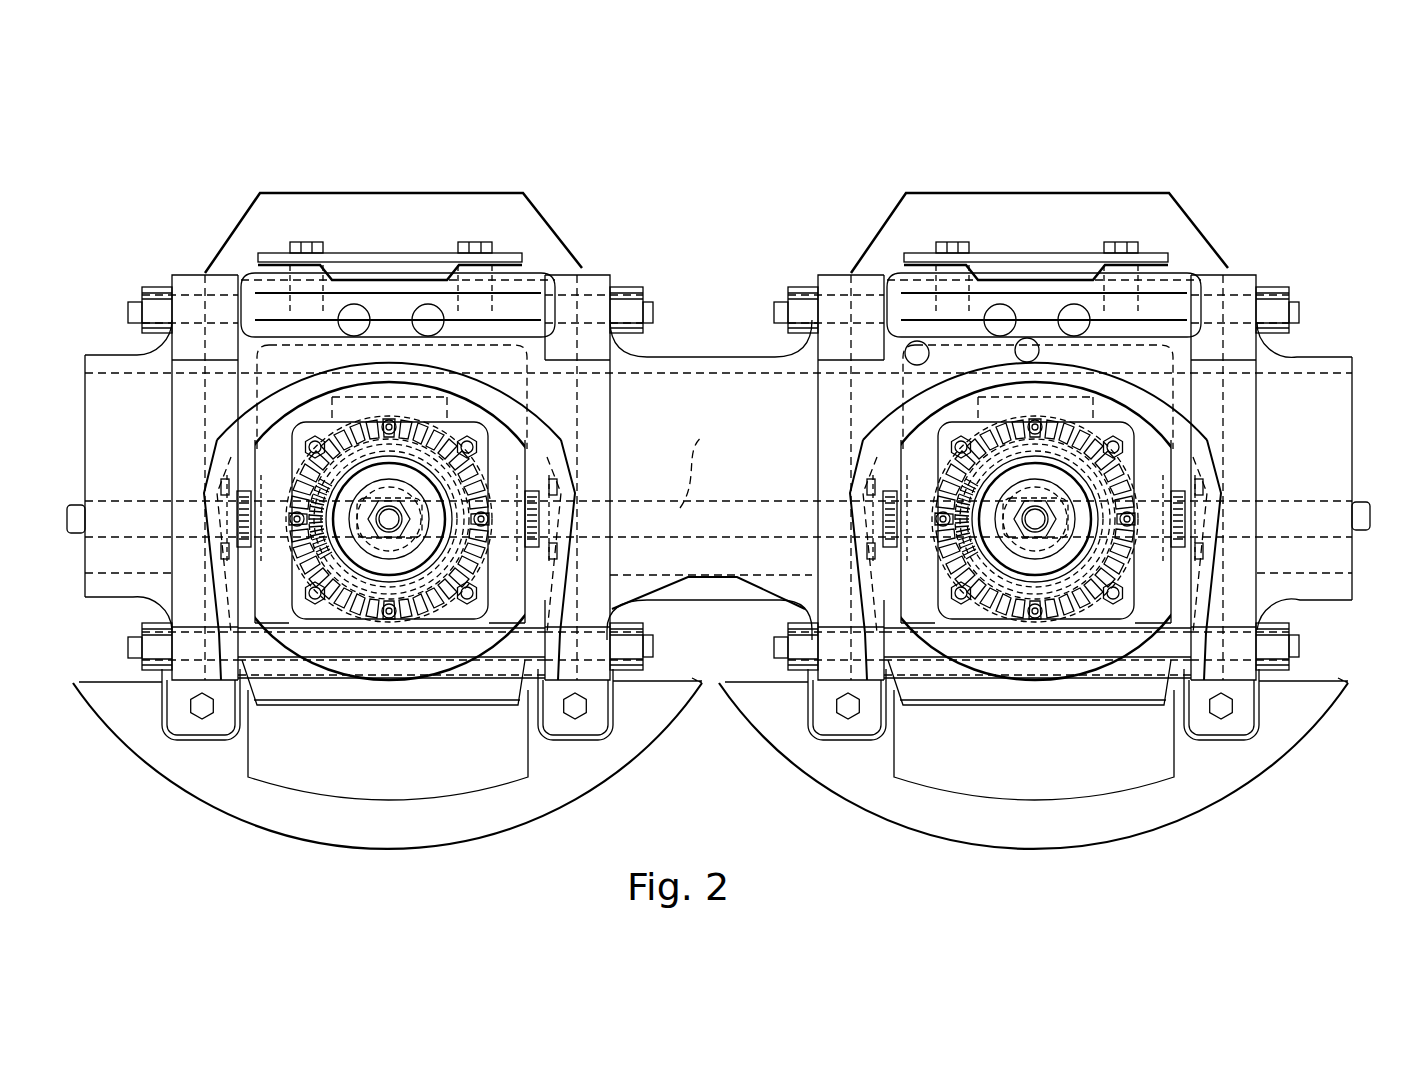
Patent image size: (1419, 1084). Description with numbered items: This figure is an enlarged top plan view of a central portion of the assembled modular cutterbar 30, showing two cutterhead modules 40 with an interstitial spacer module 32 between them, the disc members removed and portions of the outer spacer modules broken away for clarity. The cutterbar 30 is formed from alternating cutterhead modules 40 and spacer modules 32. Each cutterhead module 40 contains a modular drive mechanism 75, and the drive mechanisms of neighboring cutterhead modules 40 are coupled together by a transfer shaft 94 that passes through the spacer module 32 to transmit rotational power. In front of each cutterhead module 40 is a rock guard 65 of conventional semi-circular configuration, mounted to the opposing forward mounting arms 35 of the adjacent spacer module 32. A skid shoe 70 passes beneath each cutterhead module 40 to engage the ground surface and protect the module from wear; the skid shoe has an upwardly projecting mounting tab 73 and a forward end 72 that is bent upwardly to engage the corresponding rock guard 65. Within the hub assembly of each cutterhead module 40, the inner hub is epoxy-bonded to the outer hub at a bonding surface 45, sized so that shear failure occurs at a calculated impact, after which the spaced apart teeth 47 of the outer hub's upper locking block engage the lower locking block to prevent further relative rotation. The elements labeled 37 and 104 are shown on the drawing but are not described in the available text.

The modular cutterbar 30 is at (740, 515).
The spacer module 32 is at (93, 355).
The forward mounting arms 35 is at (183, 724).
The clamp plate 37 is at (183, 275).
The cutterhead module 40 is at (1175, 268).
The bonding surface 45 is at (433, 620).
The teeth 47 is at (337, 670).
The rock guard 65 is at (580, 805).
The skid shoe 70 is at (360, 192).
The forward end 72 is at (400, 705).
The mounting tab 73 is at (385, 253).
The modular drive mechanism 75 is at (603, 458).
The transfer shaft 94 is at (709, 464).
The shaft 104 is at (72, 500).